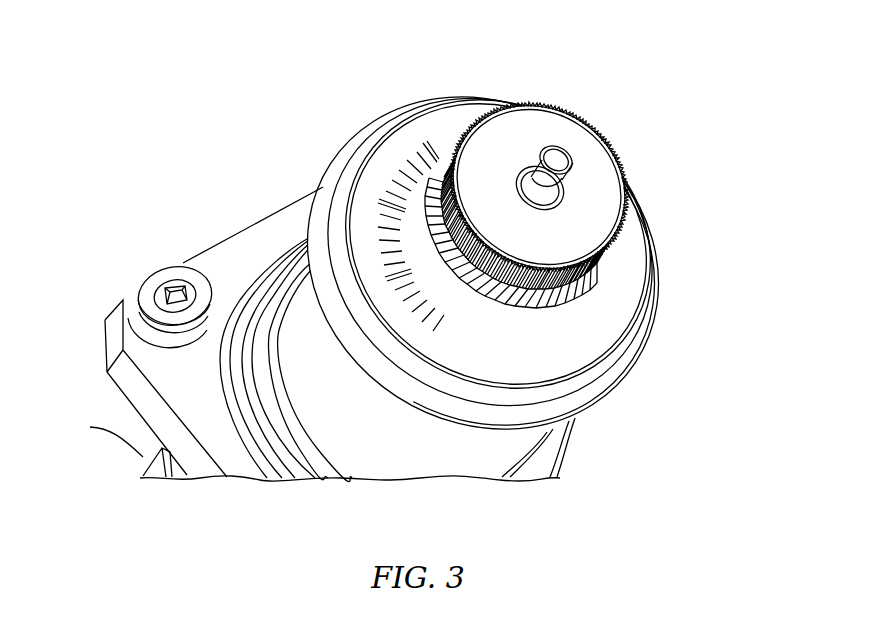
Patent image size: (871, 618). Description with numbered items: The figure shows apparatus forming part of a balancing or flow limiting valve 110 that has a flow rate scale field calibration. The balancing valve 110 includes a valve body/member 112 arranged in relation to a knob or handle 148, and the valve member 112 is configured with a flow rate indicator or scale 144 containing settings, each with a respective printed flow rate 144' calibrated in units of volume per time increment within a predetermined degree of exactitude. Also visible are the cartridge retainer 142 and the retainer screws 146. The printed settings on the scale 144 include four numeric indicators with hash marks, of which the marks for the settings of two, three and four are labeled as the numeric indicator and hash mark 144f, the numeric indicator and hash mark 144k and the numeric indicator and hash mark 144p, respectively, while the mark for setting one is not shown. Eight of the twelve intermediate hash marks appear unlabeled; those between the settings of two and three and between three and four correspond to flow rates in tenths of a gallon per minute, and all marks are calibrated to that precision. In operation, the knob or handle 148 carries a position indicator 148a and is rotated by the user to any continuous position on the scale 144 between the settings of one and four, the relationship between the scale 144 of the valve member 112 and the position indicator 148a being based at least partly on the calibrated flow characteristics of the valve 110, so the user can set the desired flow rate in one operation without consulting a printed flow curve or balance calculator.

The balancing valve 110 is at (646, 106).
The valve body/member 112 is at (148, 460).
The cartridge retainer 142 is at (150, 353).
The flow rate indicator or scale 144 is at (426, 260).
The numeric indicator and hash mark for setting 2 144f is at (412, 130).
The numeric indicator and hash mark for setting 3 144k is at (358, 194).
The numeric indicator and hash mark for setting 4 144p is at (383, 292).
The printed flow rate 144' is at (260, 126).
The retainer screws 146 is at (145, 292).
The knob or handle 148 is at (612, 190).
The position indicator 148a is at (410, 265).